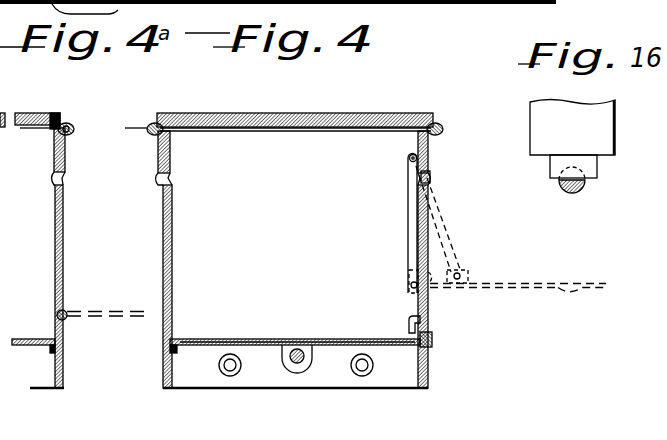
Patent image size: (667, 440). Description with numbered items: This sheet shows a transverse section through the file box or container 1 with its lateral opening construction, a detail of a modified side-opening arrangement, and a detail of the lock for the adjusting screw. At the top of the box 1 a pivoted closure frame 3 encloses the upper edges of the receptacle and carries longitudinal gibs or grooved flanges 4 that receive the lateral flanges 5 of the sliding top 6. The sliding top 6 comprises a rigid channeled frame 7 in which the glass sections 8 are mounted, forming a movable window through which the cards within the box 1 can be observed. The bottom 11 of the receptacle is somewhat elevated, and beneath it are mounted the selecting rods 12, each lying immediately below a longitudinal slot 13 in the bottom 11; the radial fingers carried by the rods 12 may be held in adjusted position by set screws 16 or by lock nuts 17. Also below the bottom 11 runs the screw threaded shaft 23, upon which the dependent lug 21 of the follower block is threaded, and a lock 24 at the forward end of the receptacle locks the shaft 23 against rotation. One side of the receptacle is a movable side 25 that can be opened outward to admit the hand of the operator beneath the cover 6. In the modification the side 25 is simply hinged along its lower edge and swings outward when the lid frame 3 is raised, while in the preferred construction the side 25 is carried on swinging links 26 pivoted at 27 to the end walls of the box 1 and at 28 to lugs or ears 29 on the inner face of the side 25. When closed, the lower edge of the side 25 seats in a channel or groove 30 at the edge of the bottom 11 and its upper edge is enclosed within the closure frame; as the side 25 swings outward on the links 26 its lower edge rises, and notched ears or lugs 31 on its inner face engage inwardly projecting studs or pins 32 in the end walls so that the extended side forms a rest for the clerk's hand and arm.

In FIG. 4A, the box or container 1 is at (63, 254).
In FIG. 4, the box or container 1 is at (165, 240).
In FIG. 4A, the frame portion of the lid or closure 3 is at (65, 165).
In FIG. 4, the frame portion of the lid or closure 3 is at (158, 150).
In FIG. 4A, the longitudinal gibs or grooved flanges 4 is at (74, 128).
In FIG. 4A, the lateral flanges of the sliding top 5 is at (72, 124).
In FIG. 4, the lateral flanges of the sliding top 5 is at (148, 124).
In FIG. 4, the sliding top 6 is at (221, 112).
In FIG. 4A, the rigid channeled frame 7 is at (50, 114).
In FIG. 4, the rigid channeled frame 7 is at (430, 125).
In FIG. 4, the glass sections 8 is at (318, 124).
In FIG. 4, the bottom of the receptacle 11 is at (262, 341).
In FIG. 4, the selecting rods 12 is at (229, 372).
In FIG. 4, the longitudinal slot 13 is at (230, 341).
In FIG. 4A, the set screws 16 is at (166, 4).
In FIG. 4, the lock nuts 17 is at (289, 4).
In FIG. 4, the dependent lug 21 is at (367, 4).
In FIG. 4, the screw threaded shaft 23 is at (298, 350).
In FIG. 16, the screw threaded shaft 23 is at (570, 188).
In FIG. 16, the lock 24 is at (553, 122).
In FIG. 4, the movable side 25 is at (426, 229).
In FIG. 4, the swinging links 26 is at (412, 233).
In FIG. 4, the pivot of the swinging links to the end walls 27 is at (424, 160).
In FIG. 4, the pivot of the swinging links to the lugs or ears 28 is at (469, 276).
In FIG. 4, the lugs or ears 29 is at (460, 274).
In FIG. 4, the channel or groove 30 is at (433, 340).
In FIG. 4, the notched ears or lugs 31 is at (410, 325).
In FIG. 4, the studs or pins 32 is at (407, 279).